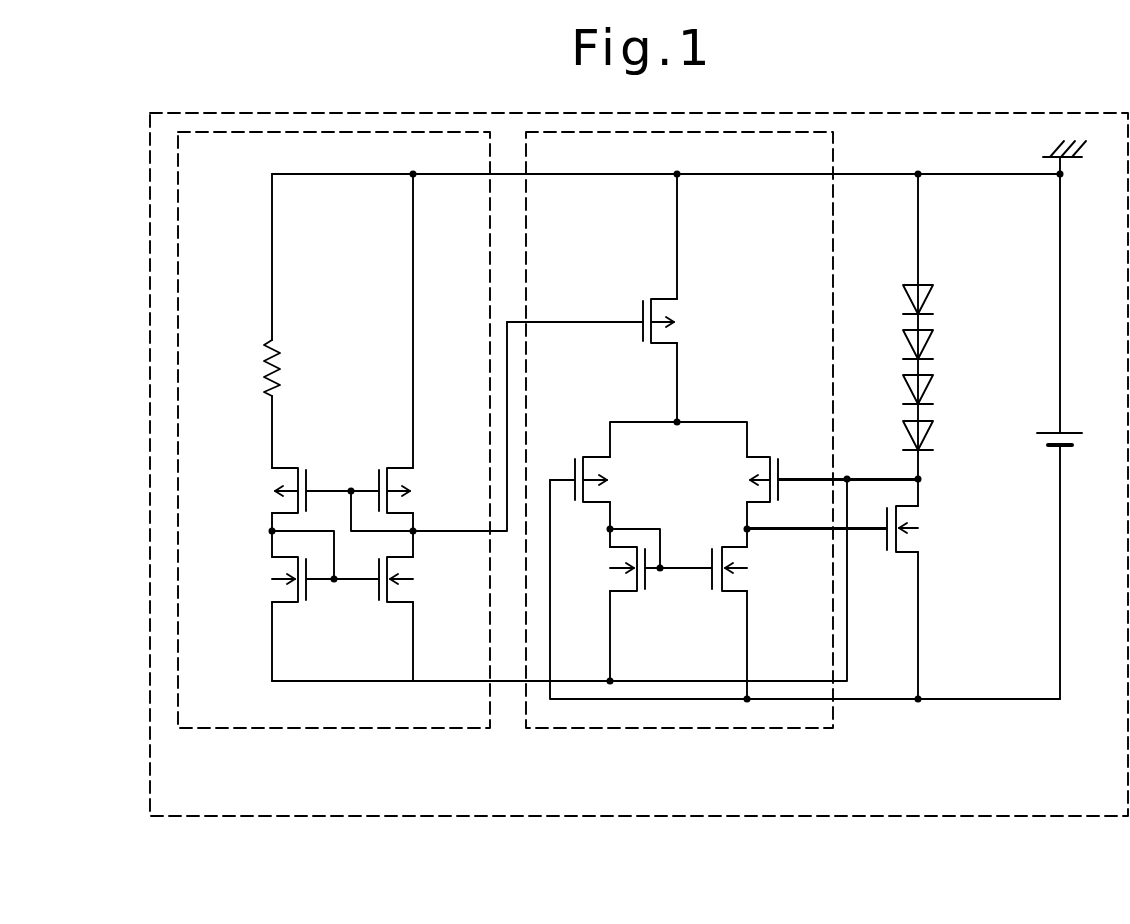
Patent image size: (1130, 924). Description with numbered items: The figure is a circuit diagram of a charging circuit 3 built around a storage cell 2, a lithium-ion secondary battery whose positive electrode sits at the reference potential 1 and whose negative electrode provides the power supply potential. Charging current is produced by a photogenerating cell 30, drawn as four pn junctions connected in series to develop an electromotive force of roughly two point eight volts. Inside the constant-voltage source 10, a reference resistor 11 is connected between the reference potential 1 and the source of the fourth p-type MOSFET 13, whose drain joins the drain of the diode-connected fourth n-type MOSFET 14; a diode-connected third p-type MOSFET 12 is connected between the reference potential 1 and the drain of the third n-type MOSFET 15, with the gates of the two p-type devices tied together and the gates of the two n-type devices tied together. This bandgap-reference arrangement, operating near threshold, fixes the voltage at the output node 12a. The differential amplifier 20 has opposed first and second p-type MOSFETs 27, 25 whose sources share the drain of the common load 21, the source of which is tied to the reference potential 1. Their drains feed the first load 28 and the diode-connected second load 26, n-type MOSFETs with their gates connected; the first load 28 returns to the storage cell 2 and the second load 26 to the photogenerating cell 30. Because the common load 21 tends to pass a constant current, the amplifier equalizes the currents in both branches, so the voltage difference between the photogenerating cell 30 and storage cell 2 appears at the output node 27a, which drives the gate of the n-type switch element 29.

The reference potential 1 is at (1074, 165).
The storage cell 2 is at (1050, 452).
The charging circuit 3 is at (1020, 817).
The constant-voltage source 10 is at (283, 730).
The reference resistor 11 is at (286, 360).
The third p-type MOSFET 12 is at (417, 478).
The output node 12a is at (413, 531).
The fourth p-type MOSFET 13 is at (268, 490).
The fourth n-type MOSFET 14 is at (268, 582).
The third n-type MOSFET 15 is at (417, 583).
The differential amplifier 20 is at (531, 730).
The common load 21 is at (685, 302).
The second p-type MOSFET 25 is at (595, 452).
The second load 26 is at (613, 573).
The first p-type MOSFET 27 is at (762, 450).
The output node 27a is at (745, 527).
The first load 28 is at (752, 573).
The switch element 29 is at (897, 560).
The photogenerating cell 30 is at (940, 386).